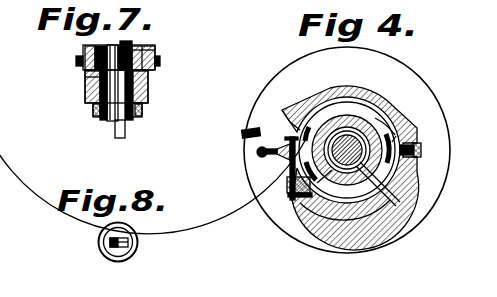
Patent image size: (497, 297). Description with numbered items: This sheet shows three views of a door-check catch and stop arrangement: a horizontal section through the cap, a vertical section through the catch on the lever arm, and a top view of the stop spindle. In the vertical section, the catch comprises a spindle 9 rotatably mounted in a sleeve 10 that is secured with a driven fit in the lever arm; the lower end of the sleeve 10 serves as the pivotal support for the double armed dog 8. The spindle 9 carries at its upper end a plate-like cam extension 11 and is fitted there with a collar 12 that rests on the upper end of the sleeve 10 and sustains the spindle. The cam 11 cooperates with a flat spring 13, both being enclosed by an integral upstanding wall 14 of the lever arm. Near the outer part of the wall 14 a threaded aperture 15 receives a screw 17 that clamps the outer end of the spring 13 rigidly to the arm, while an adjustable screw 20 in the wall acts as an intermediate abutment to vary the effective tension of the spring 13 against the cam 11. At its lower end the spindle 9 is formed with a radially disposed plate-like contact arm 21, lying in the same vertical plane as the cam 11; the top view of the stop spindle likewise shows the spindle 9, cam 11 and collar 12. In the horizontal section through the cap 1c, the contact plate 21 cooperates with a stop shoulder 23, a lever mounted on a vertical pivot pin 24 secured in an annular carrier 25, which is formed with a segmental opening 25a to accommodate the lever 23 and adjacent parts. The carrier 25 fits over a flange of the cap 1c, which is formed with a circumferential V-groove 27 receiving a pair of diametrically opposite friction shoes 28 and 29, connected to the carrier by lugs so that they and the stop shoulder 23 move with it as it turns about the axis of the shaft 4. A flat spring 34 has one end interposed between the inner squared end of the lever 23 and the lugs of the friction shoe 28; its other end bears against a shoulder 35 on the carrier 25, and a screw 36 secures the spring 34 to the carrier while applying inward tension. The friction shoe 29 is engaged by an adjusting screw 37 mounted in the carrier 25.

In FIG. 4, the removable cap 1c is at (428, 101).
In FIG. 4, the shaft or spindle 4 is at (360, 160).
In FIG. 7, the double armed dog 8 is at (143, 107).
In FIG. 7, the spindle 9 is at (103, 118).
In FIG. 8, the spindle 9 is at (126, 236).
In FIG. 7, the sleeve 10 is at (85, 87).
In FIG. 7, the cam extension 11 is at (103, 47).
In FIG. 8, the cam extension 11 is at (122, 248).
In FIG. 7, the collar 12 is at (148, 80).
In FIG. 8, the collar 12 is at (103, 256).
In FIG. 7, the flat spring 13 is at (124, 46).
In FIG. 7, the upstanding wall 14 is at (150, 50).
In FIG. 7, the threaded aperture 15 is at (83, 77).
In FIG. 7, the screw 17 is at (76, 59).
In FIG. 7, the adjustable screw 20 is at (160, 60).
In FIG. 7, the contact arm 21 is at (121, 136).
In FIG. 4, the contact arm 21 is at (250, 128).
In FIG. 4, the stop shoulder 23 is at (257, 153).
In FIG. 4, the pivot pin 24 is at (292, 146).
In FIG. 4, the annular carrier 25 is at (357, 98).
In FIG. 4, the segmental opening 25a is at (283, 111).
In FIG. 4, the V-groove 27 is at (374, 117).
In FIG. 4, the friction shoe 28 is at (318, 129).
In FIG. 4, the friction shoe 29 is at (397, 138).
In FIG. 4, the flat spring 34 is at (287, 178).
In FIG. 4, the shoulder 35 is at (308, 206).
In FIG. 4, the screw 36 is at (291, 200).
In FIG. 4, the adjusting screw 37 is at (421, 150).